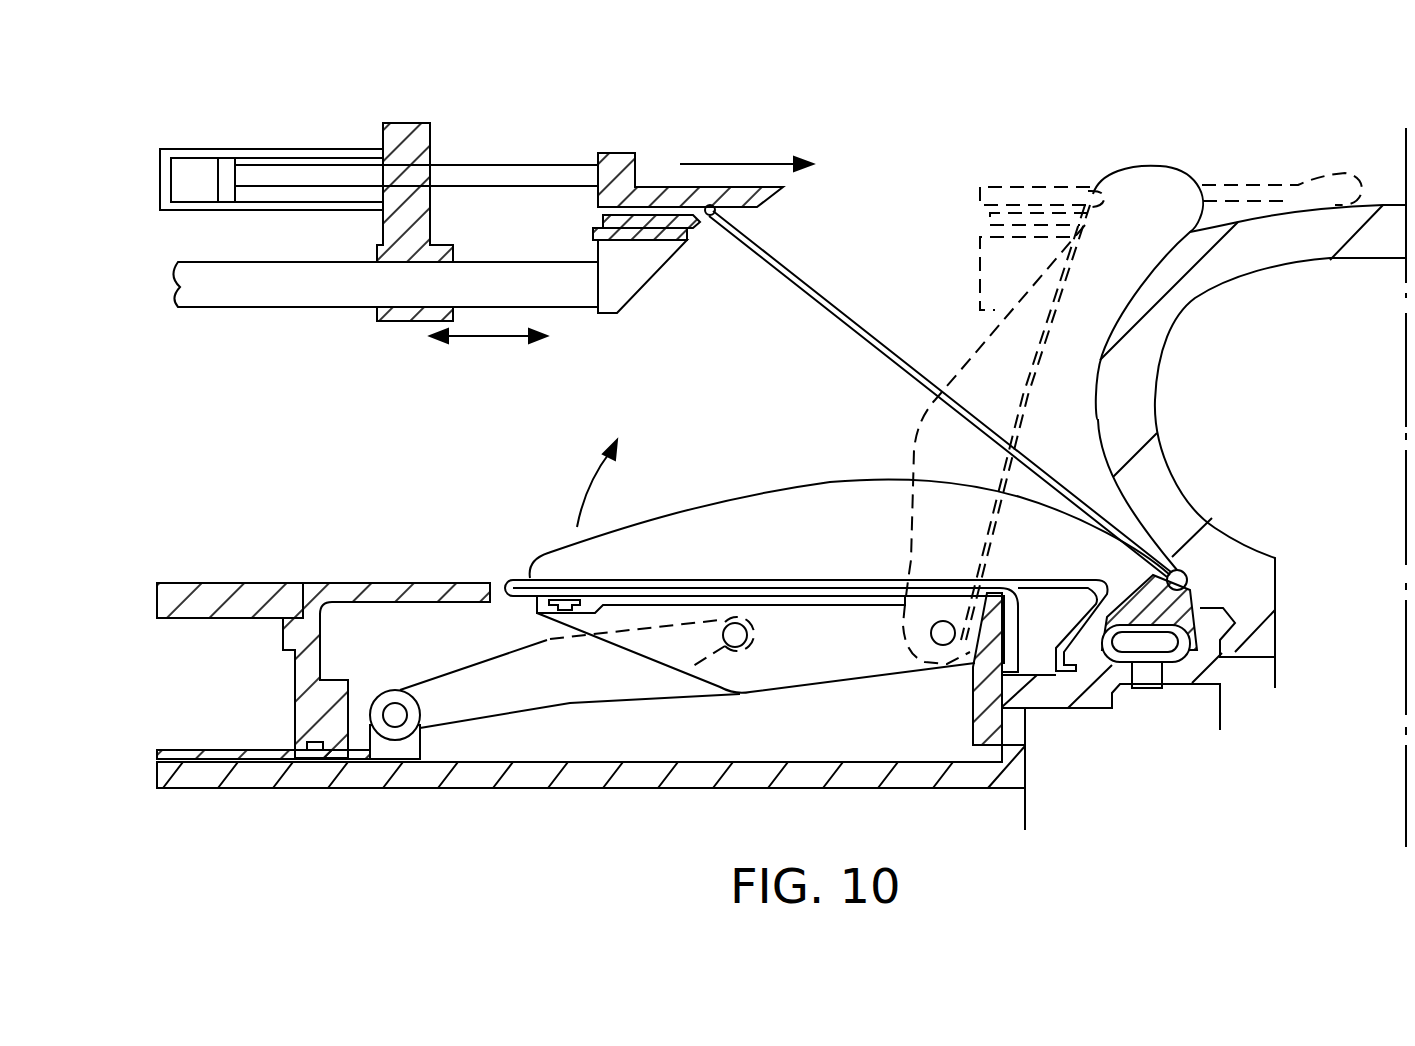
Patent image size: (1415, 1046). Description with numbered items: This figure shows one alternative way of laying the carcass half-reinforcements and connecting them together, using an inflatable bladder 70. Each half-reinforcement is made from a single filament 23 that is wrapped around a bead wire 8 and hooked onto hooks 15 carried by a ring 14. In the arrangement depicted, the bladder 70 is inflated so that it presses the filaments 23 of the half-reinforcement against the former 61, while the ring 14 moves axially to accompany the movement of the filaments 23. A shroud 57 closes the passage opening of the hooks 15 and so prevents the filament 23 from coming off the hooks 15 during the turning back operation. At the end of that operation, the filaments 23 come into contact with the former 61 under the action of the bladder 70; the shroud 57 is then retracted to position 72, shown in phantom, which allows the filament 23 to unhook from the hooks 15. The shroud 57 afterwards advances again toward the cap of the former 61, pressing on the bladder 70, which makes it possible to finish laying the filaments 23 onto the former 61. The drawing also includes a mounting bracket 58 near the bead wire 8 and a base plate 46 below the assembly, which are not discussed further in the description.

The shroud 57 is at (683, 190).
The retracted position of the shroud 72 is at (1080, 200).
The hooks 15 is at (703, 223).
The ring 14 is at (652, 255).
The filament 23 is at (827, 310).
The former 61 is at (1208, 548).
The bead wire 8 is at (1187, 578).
The mounting bracket 58 is at (1183, 613).
The inflatable bladder 70 is at (792, 585).
The base plate 46 is at (536, 782).